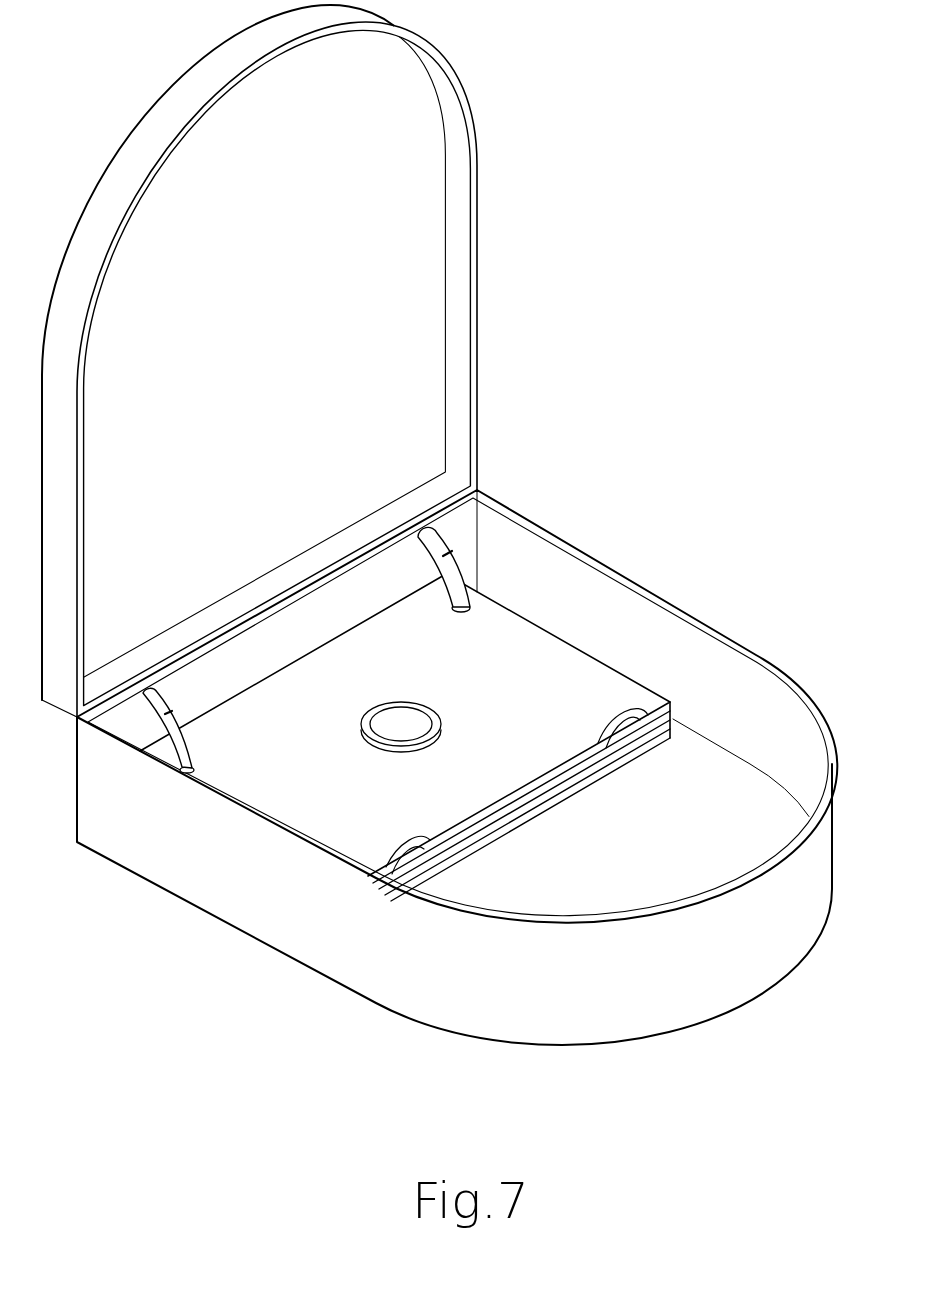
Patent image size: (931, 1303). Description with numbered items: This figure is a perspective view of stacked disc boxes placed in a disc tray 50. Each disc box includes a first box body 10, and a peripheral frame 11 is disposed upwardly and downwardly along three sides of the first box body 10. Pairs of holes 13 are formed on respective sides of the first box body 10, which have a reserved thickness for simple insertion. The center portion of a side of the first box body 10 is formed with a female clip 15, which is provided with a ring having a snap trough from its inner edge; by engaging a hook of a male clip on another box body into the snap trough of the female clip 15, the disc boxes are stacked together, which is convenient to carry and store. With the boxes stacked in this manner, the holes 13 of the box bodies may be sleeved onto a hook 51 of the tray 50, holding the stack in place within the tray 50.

The first box body 10 is at (583, 698).
The peripheral frame 11 is at (670, 702).
The holes 13 is at (462, 600).
The female clip 15 is at (433, 710).
The tray 50 is at (722, 620).
The hook 51 is at (457, 573).